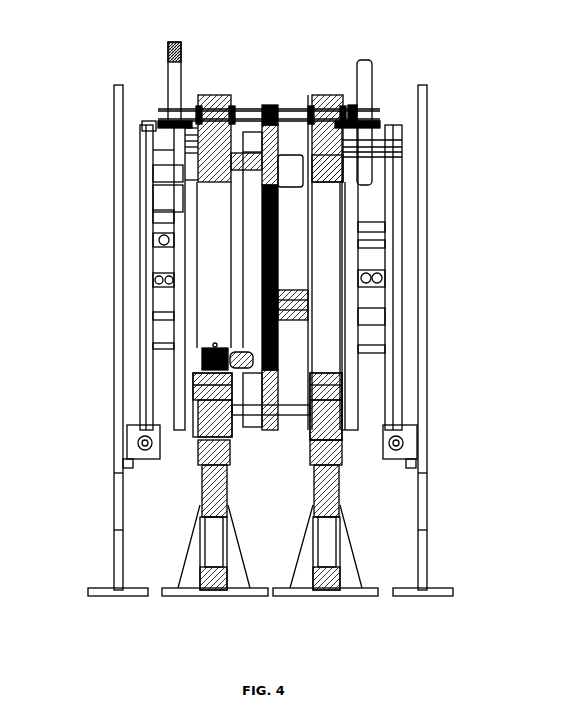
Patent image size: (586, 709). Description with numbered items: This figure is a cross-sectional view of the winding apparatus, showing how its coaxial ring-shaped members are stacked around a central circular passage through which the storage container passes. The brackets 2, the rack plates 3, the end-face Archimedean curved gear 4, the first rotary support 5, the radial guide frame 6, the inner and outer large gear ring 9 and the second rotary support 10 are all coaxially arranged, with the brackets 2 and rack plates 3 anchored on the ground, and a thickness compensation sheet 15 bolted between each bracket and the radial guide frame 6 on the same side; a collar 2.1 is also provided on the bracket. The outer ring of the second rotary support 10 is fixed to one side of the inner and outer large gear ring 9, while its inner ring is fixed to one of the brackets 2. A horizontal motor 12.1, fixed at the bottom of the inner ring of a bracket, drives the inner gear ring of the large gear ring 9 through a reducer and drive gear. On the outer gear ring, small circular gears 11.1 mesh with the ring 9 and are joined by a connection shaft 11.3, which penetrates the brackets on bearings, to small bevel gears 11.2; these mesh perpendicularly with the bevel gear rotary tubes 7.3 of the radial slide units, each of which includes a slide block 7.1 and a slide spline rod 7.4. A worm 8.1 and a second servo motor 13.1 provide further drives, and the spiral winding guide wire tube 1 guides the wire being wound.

The spiral winding guide wire tube 1 is at (178, 230).
The bracket 2 is at (203, 463).
The collar 2.1 is at (109, 250).
The rack plate 3 is at (105, 340).
The end-face Archimedean curved gear 4 is at (137, 85).
The first rotary support 5 is at (418, 347).
The radial guide frame 6 is at (378, 155).
The slide block 7.1 is at (183, 190).
The bevel gear rotary tube 7.3 is at (193, 80).
The slide spline rod 7.4 is at (193, 37).
The worm 8.1 is at (127, 422).
The inner and outer large gear ring 9 is at (278, 412).
The second rotary support 10 is at (262, 420).
The small circular gear 11.1 is at (273, 108).
The small bevel gear 11.2 is at (357, 110).
The connection shaft 11.3 is at (293, 112).
The horizontal motor 12.1 is at (157, 342).
The second servo motor 13.1 is at (310, 317).
The thickness compensation sheet 15 is at (123, 160).